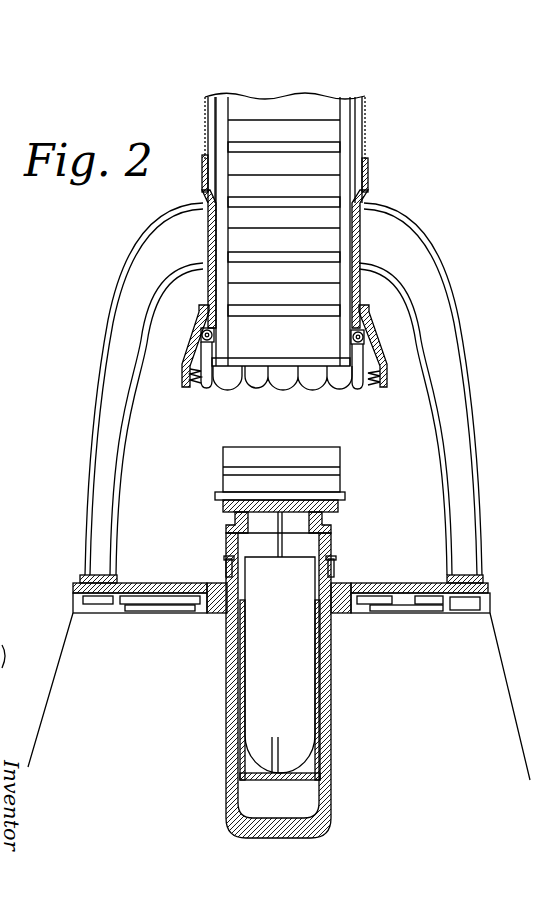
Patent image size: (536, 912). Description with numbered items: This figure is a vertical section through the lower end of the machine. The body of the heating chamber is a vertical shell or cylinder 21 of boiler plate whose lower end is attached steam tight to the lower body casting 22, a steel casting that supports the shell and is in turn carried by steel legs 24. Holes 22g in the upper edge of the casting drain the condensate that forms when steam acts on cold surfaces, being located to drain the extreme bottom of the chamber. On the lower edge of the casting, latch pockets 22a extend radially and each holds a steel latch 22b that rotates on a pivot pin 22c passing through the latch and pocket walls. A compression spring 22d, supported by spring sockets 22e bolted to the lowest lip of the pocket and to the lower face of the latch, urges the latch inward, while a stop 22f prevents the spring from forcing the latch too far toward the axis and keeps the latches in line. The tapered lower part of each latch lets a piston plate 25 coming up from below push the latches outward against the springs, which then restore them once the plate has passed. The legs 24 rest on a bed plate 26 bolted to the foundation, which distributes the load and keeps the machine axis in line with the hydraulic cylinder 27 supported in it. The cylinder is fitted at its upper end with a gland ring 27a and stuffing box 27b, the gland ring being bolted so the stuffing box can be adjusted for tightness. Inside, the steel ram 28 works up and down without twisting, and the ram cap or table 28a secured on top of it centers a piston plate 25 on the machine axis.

The shell or cylinder 21 is at (363, 125).
The lower body casting 22 is at (367, 190).
The latch pockets 22a is at (192, 355).
The latch 22b is at (223, 390).
The pivot pin 22c is at (355, 337).
The spring 22d is at (187, 395).
The spring sockets 22e is at (187, 378).
The stop 22f is at (213, 323).
The holes 22g is at (202, 198).
The legs 24 is at (98, 407).
The piston plate 25 is at (288, 252).
The bed plate 26 is at (387, 587).
The hydraulic cylinder 27 is at (332, 707).
The gland ring 27a is at (335, 565).
The stuffing box 27b is at (223, 575).
The ram 28 is at (281, 610).
The ram cap or table 28a is at (338, 508).